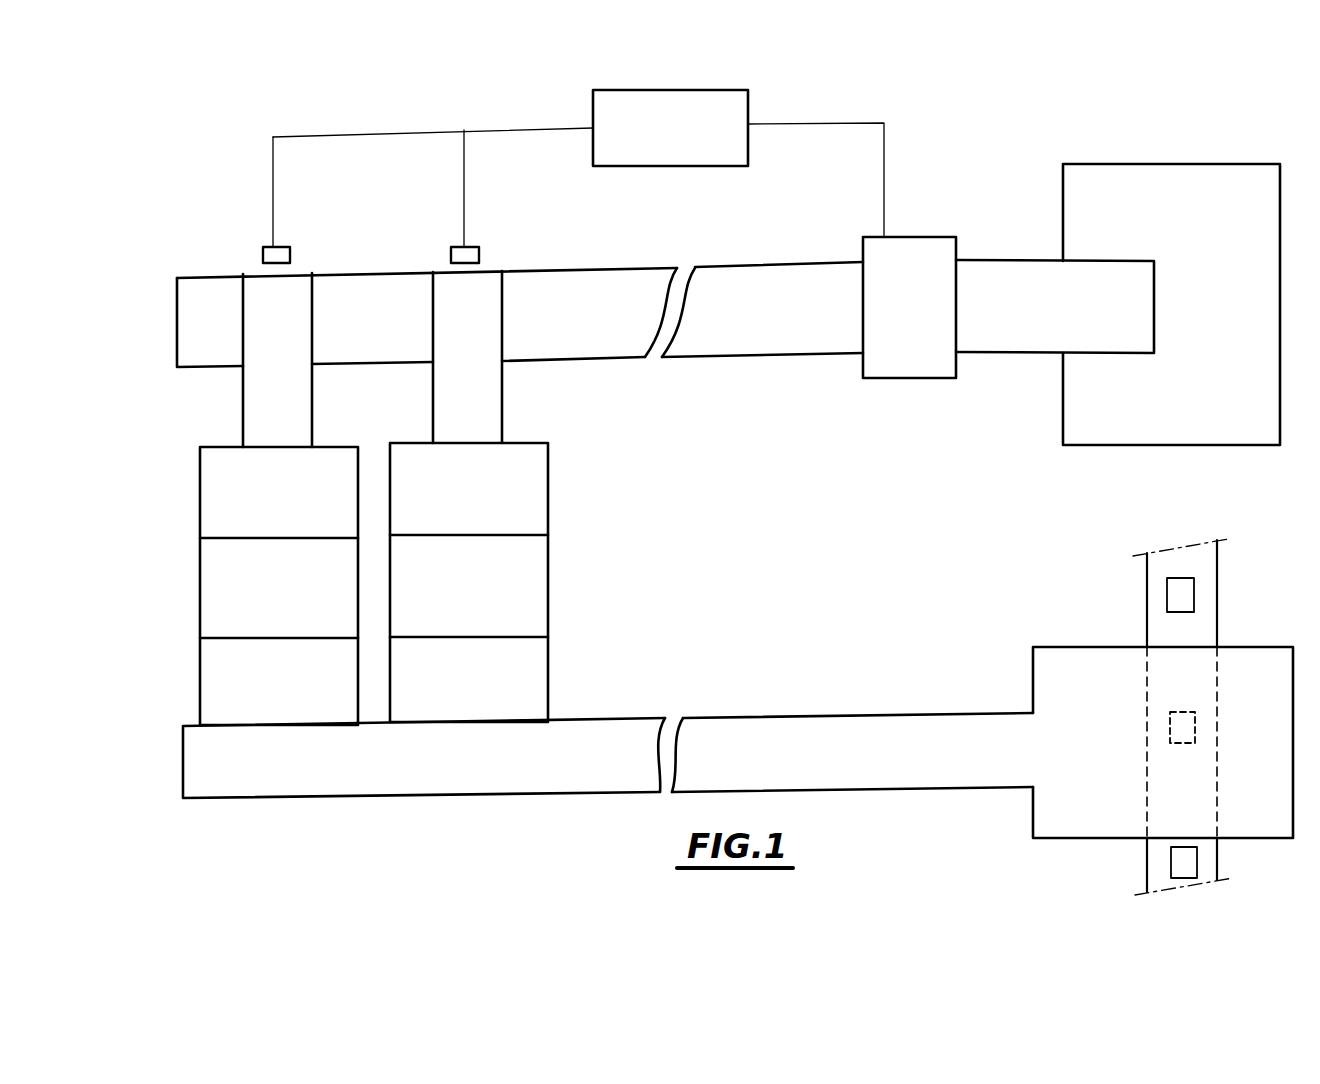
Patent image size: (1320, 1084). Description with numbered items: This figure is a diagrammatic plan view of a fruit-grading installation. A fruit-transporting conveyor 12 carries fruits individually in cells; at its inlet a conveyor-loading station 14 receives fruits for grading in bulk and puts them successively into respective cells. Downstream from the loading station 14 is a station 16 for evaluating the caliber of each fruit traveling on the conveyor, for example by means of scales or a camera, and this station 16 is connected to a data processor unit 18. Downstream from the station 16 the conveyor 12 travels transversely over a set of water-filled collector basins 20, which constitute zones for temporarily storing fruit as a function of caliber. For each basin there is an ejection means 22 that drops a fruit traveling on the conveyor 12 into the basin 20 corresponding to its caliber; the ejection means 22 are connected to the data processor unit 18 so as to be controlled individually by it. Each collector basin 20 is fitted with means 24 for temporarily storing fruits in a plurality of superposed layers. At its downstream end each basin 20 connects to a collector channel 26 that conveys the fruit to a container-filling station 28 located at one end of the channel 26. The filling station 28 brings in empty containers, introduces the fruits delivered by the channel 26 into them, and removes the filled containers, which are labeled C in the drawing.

The fruit-transporting conveyor 12 is at (713, 333).
The conveyor-loading station 14 is at (1076, 447).
The caliber evaluating station 16 is at (931, 232).
The data processor unit 18 is at (608, 115).
The collector basin 20 is at (197, 513).
The ejection means 22 is at (262, 257).
The means for temporarily storing fruits 24 is at (188, 587).
The collector channel 26 is at (415, 772).
The container-filling station 28 is at (1030, 645).
The containers C is at (1180, 588).